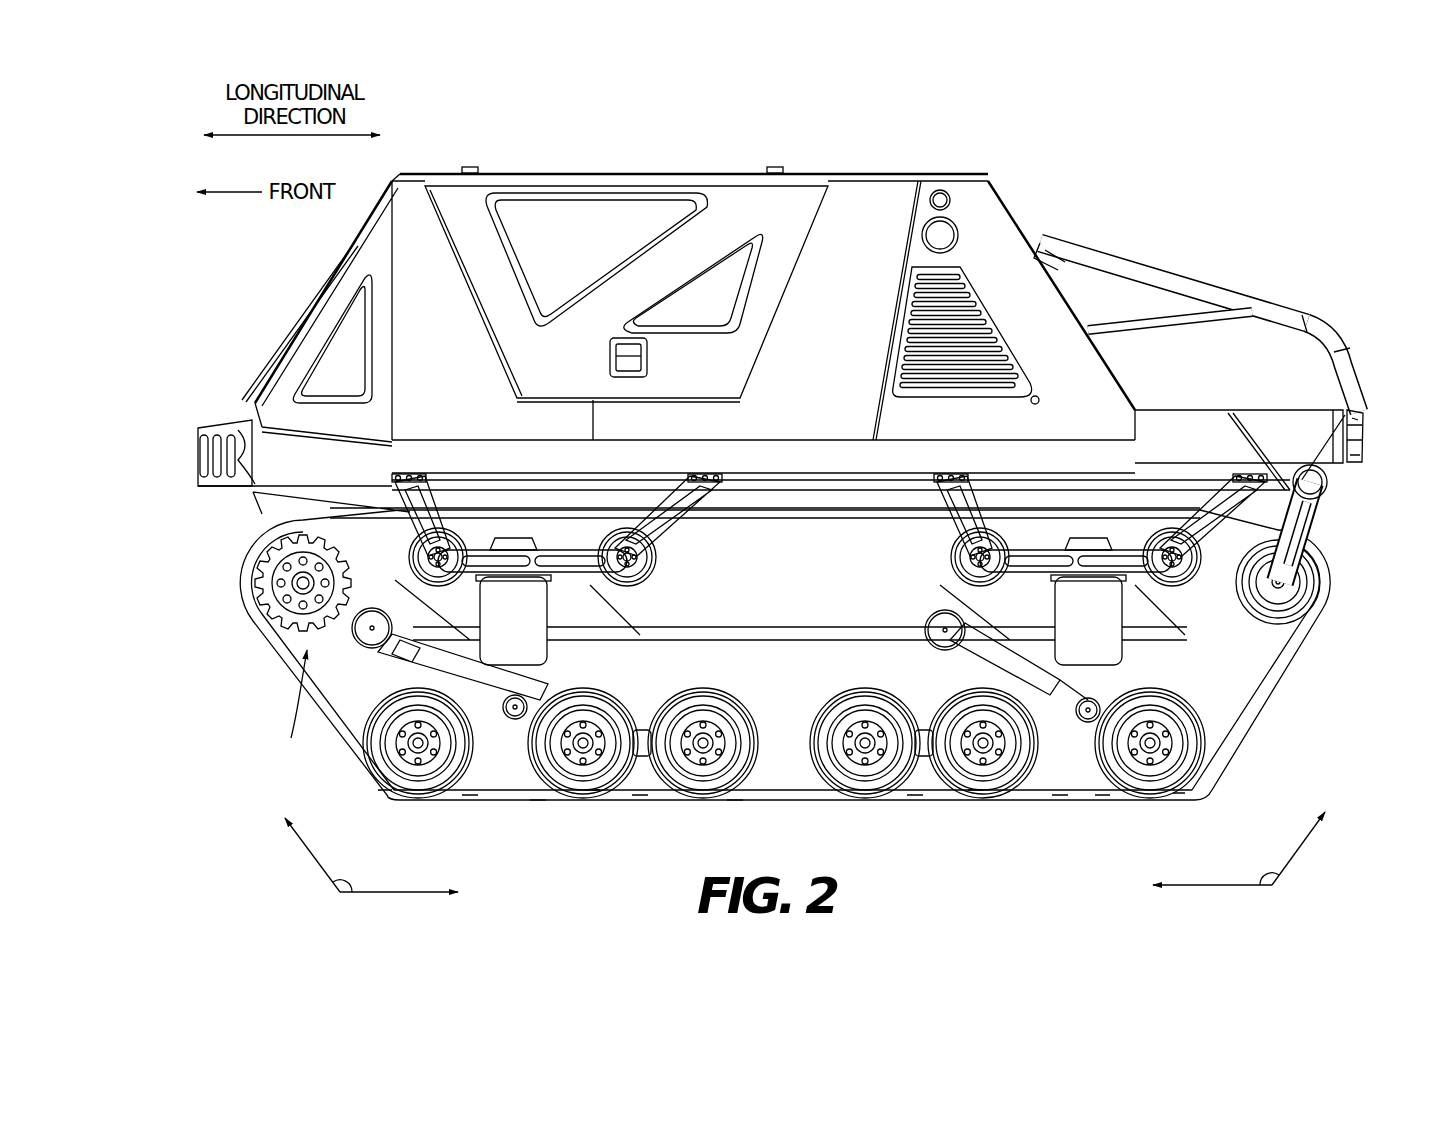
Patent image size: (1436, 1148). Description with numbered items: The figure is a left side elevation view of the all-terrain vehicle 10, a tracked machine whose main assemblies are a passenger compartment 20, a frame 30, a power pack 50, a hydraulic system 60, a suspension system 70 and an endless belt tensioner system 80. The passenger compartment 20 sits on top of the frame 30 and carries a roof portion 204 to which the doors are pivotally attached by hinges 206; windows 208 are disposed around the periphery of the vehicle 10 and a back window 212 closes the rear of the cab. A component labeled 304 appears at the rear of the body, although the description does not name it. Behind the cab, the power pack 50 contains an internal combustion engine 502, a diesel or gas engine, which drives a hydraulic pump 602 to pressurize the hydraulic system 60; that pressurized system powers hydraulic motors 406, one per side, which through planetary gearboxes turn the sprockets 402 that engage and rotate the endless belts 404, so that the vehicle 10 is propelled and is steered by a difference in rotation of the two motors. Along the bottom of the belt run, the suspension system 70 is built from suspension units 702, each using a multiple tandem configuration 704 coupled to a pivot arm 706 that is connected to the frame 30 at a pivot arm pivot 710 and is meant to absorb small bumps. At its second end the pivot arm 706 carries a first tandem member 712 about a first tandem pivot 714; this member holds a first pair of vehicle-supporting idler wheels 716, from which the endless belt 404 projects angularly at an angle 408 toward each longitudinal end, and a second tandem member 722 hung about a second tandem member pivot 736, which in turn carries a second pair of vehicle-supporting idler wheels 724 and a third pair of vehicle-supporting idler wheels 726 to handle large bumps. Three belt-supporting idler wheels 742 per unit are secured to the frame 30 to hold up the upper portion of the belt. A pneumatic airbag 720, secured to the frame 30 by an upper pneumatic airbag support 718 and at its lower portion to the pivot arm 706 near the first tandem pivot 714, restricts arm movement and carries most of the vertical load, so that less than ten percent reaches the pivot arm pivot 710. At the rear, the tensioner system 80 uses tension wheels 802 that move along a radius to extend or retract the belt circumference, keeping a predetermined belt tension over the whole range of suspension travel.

The all-terrain vehicle 10 is at (976, 118).
The passenger compartment 20 is at (1047, 150).
The frame 30 is at (283, 503).
The power pack 50 is at (1260, 258).
The hydraulic system 60 is at (1347, 315).
The suspension system 70 is at (1240, 752).
The endless belt tensioner system 80 is at (1334, 511).
The roof portion 204 is at (598, 172).
The hinges 206 is at (471, 167).
The windows 208 is at (556, 255).
The back window 212 is at (1087, 180).
The rear deck brace 304 is at (1240, 425).
The sprockets 402 is at (275, 627).
The endless belts 404 is at (1318, 603).
The hydraulic motors 406 is at (293, 708).
The angular projection of the endless belt 408 is at (313, 856).
The internal combustion engine 502 is at (1305, 283).
The hydraulic pump 602 is at (1352, 487).
The suspension units 702 is at (538, 826).
The multiple tandem configuration 704 is at (593, 830).
The pivot arm 706 is at (412, 658).
The pivot arm pivot 710 is at (372, 648).
The first tandem member 712 is at (470, 794).
The first tandem pivot 714 is at (525, 700).
The first pair of vehicle-supporting idler wheels 716 is at (385, 793).
The upper pneumatic airbag support 718 is at (510, 545).
The pneumatic airbag 720 is at (497, 636).
The second tandem member 722 is at (640, 794).
The second pair of vehicle-supporting idler wheels 724 is at (518, 824).
The third pair of vehicle-supporting idler wheels 726 is at (735, 798).
The second tandem member pivot 736 is at (642, 728).
The belt-supporting idler wheels 742 is at (430, 500).
The tension wheels 802 is at (1284, 590).